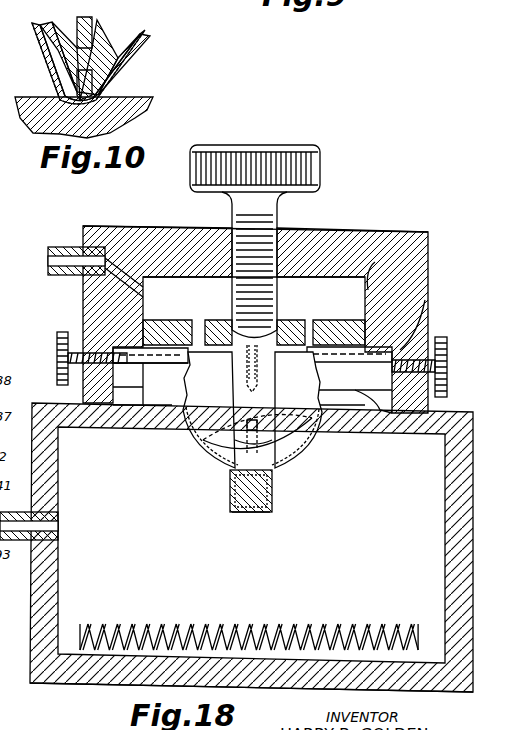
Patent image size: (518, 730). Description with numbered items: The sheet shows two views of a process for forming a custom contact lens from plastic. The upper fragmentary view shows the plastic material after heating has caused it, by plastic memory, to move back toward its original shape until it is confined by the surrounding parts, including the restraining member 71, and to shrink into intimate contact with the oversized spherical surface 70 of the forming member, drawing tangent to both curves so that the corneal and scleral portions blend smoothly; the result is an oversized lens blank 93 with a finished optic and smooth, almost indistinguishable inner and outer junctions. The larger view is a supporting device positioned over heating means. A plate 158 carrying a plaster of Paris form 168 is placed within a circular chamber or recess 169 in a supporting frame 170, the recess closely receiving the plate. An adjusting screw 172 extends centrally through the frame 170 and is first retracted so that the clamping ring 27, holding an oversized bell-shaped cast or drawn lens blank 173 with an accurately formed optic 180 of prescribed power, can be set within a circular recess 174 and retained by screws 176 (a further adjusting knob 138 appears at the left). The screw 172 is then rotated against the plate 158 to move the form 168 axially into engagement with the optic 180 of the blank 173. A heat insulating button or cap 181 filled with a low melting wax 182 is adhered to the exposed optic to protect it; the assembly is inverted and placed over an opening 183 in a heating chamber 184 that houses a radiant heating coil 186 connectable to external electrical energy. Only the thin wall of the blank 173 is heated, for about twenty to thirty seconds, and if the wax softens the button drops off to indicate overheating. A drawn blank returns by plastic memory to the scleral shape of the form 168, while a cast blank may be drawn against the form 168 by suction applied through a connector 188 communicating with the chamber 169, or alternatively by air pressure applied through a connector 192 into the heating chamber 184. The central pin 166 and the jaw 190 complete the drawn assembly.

In FIG. 10, the oversized lens blank 93 is at (135, 32).
In FIG. 10, the oversized spherical surface 70 is at (110, 76).
In FIG. 10, the restraining member 71 is at (62, 77).
In FIG. 18, the adjusting screw 172 is at (318, 165).
In FIG. 18, the plate 158 is at (288, 330).
In FIG. 18, the supporting frame 170 is at (355, 238).
In FIG. 18, the circular chamber or recess 169 is at (428, 233).
In FIG. 18, the connector 188 is at (68, 246).
In FIG. 18, the center pin 166 is at (270, 398).
In FIG. 18, the left jaw 190 is at (192, 432).
In FIG. 18, the lens blank 173 is at (318, 446).
In FIG. 18, the clamping ring 27 is at (378, 416).
In FIG. 18, the plaster of Paris form 168 is at (224, 442).
In FIG. 18, the optic 180 is at (274, 490).
In FIG. 18, the heat insulating button or cap 181 is at (272, 508).
In FIG. 18, the low melting wax 182 is at (250, 514).
In FIG. 18, the left adjusting knob 138 is at (92, 358).
In FIG. 18, the circular recess 174 is at (430, 332).
In FIG. 18, the screws 176 is at (448, 367).
In FIG. 18, the opening 183 is at (130, 428).
In FIG. 18, the heating chamber 184 is at (78, 610).
In FIG. 18, the radiant heating coil 186 is at (160, 626).
In FIG. 18, the connector 192 is at (22, 540).